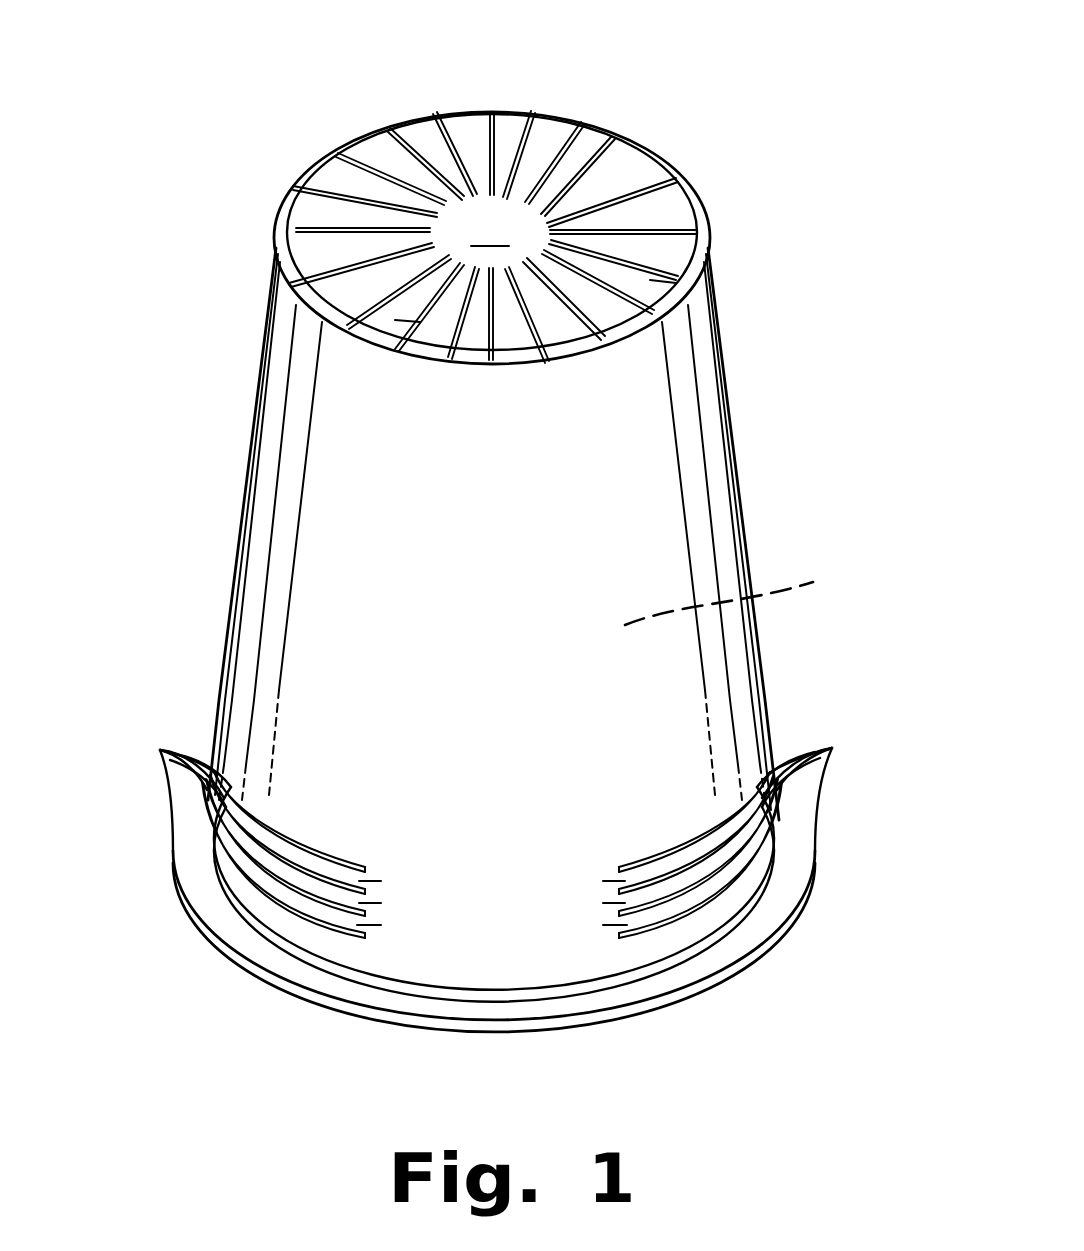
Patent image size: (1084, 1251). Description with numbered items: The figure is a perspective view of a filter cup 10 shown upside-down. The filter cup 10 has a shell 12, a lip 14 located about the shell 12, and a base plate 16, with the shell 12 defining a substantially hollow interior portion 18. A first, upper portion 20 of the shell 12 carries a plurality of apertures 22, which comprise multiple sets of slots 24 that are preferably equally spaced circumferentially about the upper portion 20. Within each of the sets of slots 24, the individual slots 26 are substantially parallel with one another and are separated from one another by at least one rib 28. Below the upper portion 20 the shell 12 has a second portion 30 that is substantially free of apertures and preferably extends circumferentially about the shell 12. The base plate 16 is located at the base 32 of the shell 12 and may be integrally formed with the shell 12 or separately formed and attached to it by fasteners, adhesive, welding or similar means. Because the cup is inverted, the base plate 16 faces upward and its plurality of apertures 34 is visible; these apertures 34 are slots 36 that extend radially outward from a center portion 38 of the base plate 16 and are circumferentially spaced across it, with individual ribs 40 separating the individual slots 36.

The filter cup 10 is at (641, 70).
The shell 12 is at (725, 486).
The lip 14 is at (800, 853).
The base plate 16 is at (655, 210).
The hollow interior portion 18 is at (741, 591).
The upper portion 20 is at (176, 652).
The apertures 22 is at (284, 935).
The sets of slots 24 is at (578, 866).
The individual slots 26 is at (161, 750).
The rib 28 is at (833, 749).
The second portion 30 is at (174, 500).
The base 32 is at (220, 296).
The apertures 34 is at (344, 113).
The slots 36 is at (522, 118).
The center portion 38 is at (490, 228).
The ribs 40 is at (468, 128).